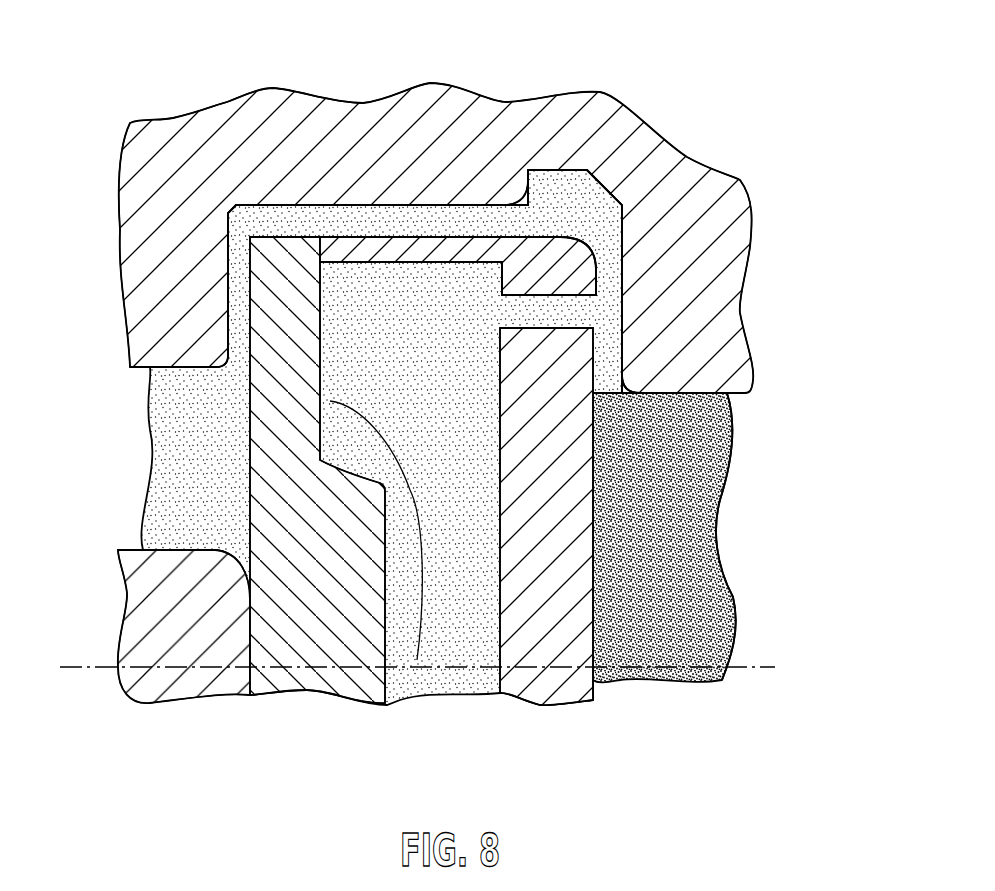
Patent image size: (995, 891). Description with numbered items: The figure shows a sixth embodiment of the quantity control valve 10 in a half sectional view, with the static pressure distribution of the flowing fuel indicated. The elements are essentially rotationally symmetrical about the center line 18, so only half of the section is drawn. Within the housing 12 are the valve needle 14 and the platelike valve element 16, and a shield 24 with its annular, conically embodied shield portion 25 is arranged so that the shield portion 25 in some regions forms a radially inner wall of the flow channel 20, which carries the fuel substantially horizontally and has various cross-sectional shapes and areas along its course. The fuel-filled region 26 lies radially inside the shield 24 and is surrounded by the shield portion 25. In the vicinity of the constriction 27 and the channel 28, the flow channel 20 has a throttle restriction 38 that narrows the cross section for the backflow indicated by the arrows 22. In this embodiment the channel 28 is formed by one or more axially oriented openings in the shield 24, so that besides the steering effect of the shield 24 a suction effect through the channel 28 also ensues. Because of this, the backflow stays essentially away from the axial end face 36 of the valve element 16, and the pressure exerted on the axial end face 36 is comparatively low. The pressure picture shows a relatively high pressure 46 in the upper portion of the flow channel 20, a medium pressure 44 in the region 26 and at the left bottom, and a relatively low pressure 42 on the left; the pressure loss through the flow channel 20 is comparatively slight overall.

The quantity control valve 10 is at (722, 80).
The housing 12 is at (168, 178).
The valve needle 14 is at (178, 622).
The valve element 16 is at (307, 627).
The center line 18 is at (778, 672).
The flow channel 20 is at (422, 202).
The arrows 22 is at (37, 460).
The shield 24 is at (603, 550).
The shield portion 25 is at (382, 250).
The region 26 is at (475, 467).
The constriction 27 is at (314, 222).
The channel 28 is at (548, 283).
The axial end face 36 is at (417, 660).
The throttle restriction 38 is at (630, 313).
The relatively low pressure 42 is at (193, 493).
The medium pressure 44 is at (588, 197).
The relatively high pressure 46 is at (685, 457).